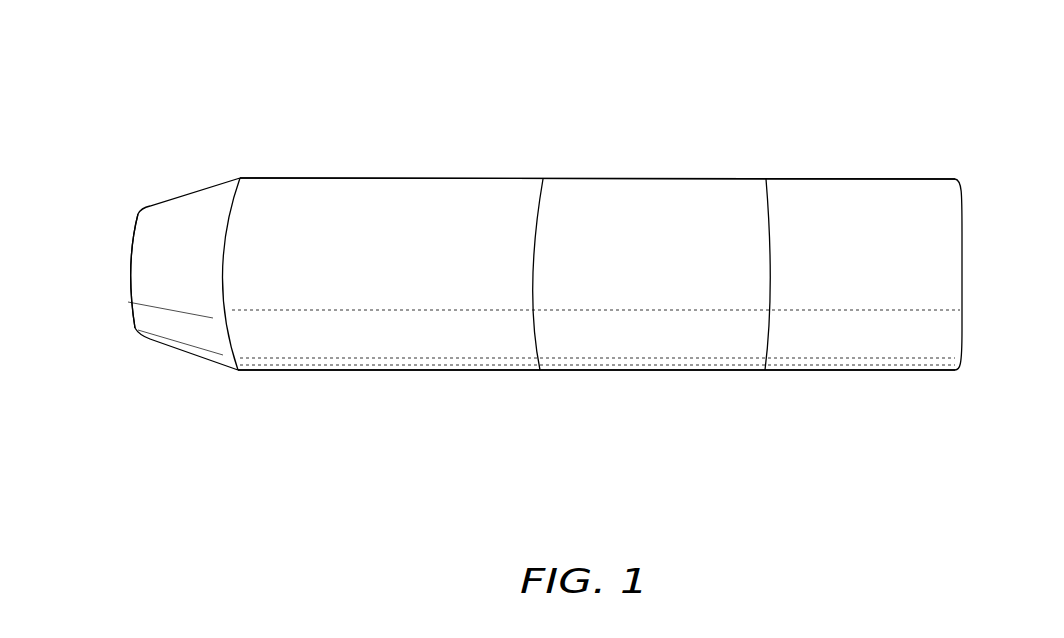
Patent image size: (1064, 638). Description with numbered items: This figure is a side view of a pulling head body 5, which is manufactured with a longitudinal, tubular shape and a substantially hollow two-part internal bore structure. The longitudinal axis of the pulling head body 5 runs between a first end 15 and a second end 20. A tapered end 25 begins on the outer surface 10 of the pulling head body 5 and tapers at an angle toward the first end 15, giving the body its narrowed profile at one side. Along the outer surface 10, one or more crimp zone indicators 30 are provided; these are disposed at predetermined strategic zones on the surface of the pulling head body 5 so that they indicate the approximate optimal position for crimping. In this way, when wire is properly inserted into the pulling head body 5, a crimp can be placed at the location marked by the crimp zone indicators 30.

The pulling head body 5 is at (646, 84).
The outer surface 10 is at (345, 178).
The first end 15 is at (130, 236).
The second end 20 is at (962, 220).
The tapered end 25 is at (188, 195).
The crimp zone indicators 30 is at (534, 340).